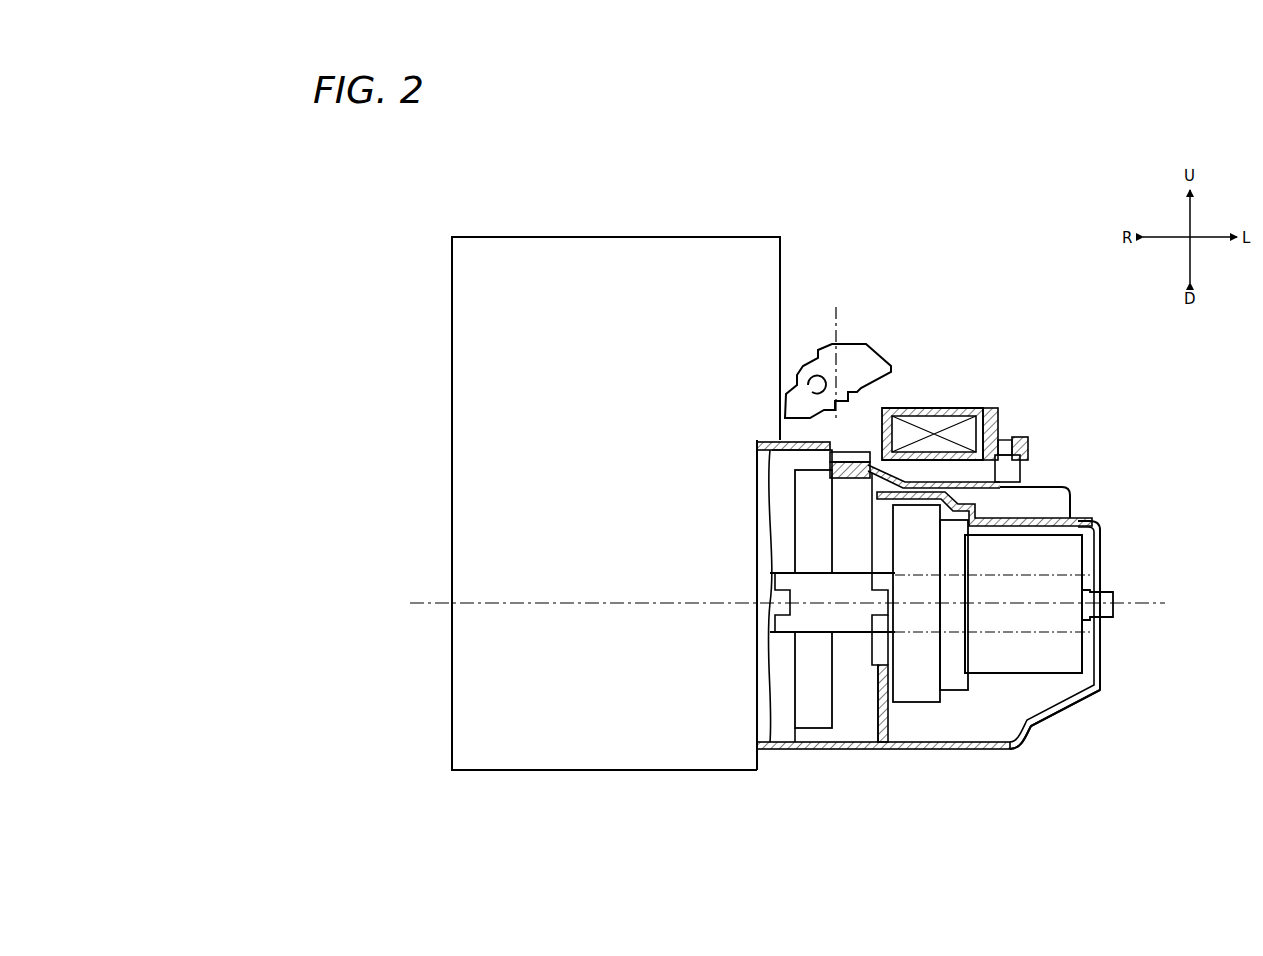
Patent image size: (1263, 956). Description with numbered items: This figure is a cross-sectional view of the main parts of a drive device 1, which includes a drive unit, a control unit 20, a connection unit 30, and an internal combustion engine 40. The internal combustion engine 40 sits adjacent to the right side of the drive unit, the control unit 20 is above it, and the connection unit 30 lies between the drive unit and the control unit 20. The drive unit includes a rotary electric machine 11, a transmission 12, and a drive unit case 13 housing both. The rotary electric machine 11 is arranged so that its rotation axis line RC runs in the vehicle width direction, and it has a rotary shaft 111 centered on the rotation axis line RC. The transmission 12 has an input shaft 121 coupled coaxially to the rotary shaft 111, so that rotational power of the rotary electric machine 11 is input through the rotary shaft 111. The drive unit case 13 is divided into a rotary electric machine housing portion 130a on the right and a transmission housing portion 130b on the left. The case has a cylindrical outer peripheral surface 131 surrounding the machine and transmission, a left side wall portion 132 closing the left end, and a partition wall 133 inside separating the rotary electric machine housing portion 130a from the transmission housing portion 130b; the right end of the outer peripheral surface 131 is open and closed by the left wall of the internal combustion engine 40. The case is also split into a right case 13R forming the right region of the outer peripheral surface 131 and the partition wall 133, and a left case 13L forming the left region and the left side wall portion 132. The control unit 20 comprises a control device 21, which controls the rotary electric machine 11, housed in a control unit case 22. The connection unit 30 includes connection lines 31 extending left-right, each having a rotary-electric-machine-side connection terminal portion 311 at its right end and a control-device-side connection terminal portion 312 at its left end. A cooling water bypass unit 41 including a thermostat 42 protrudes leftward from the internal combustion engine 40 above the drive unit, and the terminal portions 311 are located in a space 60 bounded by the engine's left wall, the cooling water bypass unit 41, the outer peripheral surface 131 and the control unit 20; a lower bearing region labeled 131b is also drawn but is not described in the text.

The drive device 1 is at (1000, 215).
The internal combustion engine 40 is at (463, 236).
The cooling water bypass unit 41 is at (868, 345).
The thermostat 42 is at (855, 370).
The space 60 is at (837, 353).
The control unit 20 is at (987, 390).
The control device 21 is at (995, 410).
The control unit case 22 is at (940, 408).
The connection unit 30 is at (1006, 470).
The connection line 31 is at (992, 432).
The rotary-electric-machine-side connection terminal portion 311 is at (866, 460).
The control-device-side connection terminal portion 312 is at (1030, 446).
The rotary electric machine 11 is at (806, 683).
The rotary shaft 111 is at (846, 622).
The transmission 12 is at (1055, 556).
The input shaft 121 is at (1110, 600).
The drive unit case 13 is at (953, 635).
The left case 13L is at (1097, 518).
The right case 13R is at (782, 757).
The rotary electric machine housing portion 130a is at (862, 690).
The transmission housing portion 130b is at (1018, 695).
The outer peripheral surface 131 is at (1022, 487).
The bearing holder (lower) 131b is at (803, 750).
The left side wall portion 132 is at (1104, 540).
The partition wall 133 is at (888, 660).
The rotation axis line RC is at (1150, 608).